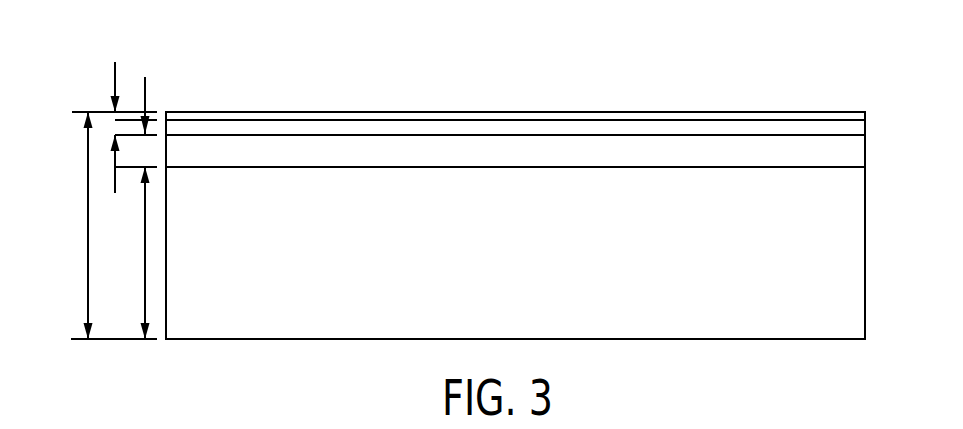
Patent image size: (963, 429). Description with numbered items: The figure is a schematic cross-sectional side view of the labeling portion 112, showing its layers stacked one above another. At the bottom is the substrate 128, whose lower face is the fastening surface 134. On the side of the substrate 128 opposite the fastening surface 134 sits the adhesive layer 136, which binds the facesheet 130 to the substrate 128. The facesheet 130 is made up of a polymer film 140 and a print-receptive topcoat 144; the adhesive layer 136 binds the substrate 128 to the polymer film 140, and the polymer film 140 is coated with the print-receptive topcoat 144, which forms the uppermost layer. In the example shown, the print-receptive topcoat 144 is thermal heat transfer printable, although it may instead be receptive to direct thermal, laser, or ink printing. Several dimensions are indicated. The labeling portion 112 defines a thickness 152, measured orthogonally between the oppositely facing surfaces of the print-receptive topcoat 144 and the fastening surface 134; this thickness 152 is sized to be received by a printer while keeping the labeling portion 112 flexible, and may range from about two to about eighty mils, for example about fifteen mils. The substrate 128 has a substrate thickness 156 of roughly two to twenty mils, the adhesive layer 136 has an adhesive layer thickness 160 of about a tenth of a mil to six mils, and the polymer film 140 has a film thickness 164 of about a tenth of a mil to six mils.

The labeling portion 112 is at (731, 56).
The substrate 128 is at (860, 277).
The facesheet 130 is at (866, 118).
The fastening surface 134 is at (730, 340).
The adhesive layer 136 is at (837, 158).
The polymer film 140 is at (860, 127).
The print-receptive topcoat 144 is at (780, 117).
The thickness 152 is at (88, 227).
The substrate thickness 156 is at (142, 253).
The adhesive layer thickness 160 is at (145, 95).
The film thickness 164 is at (115, 83).